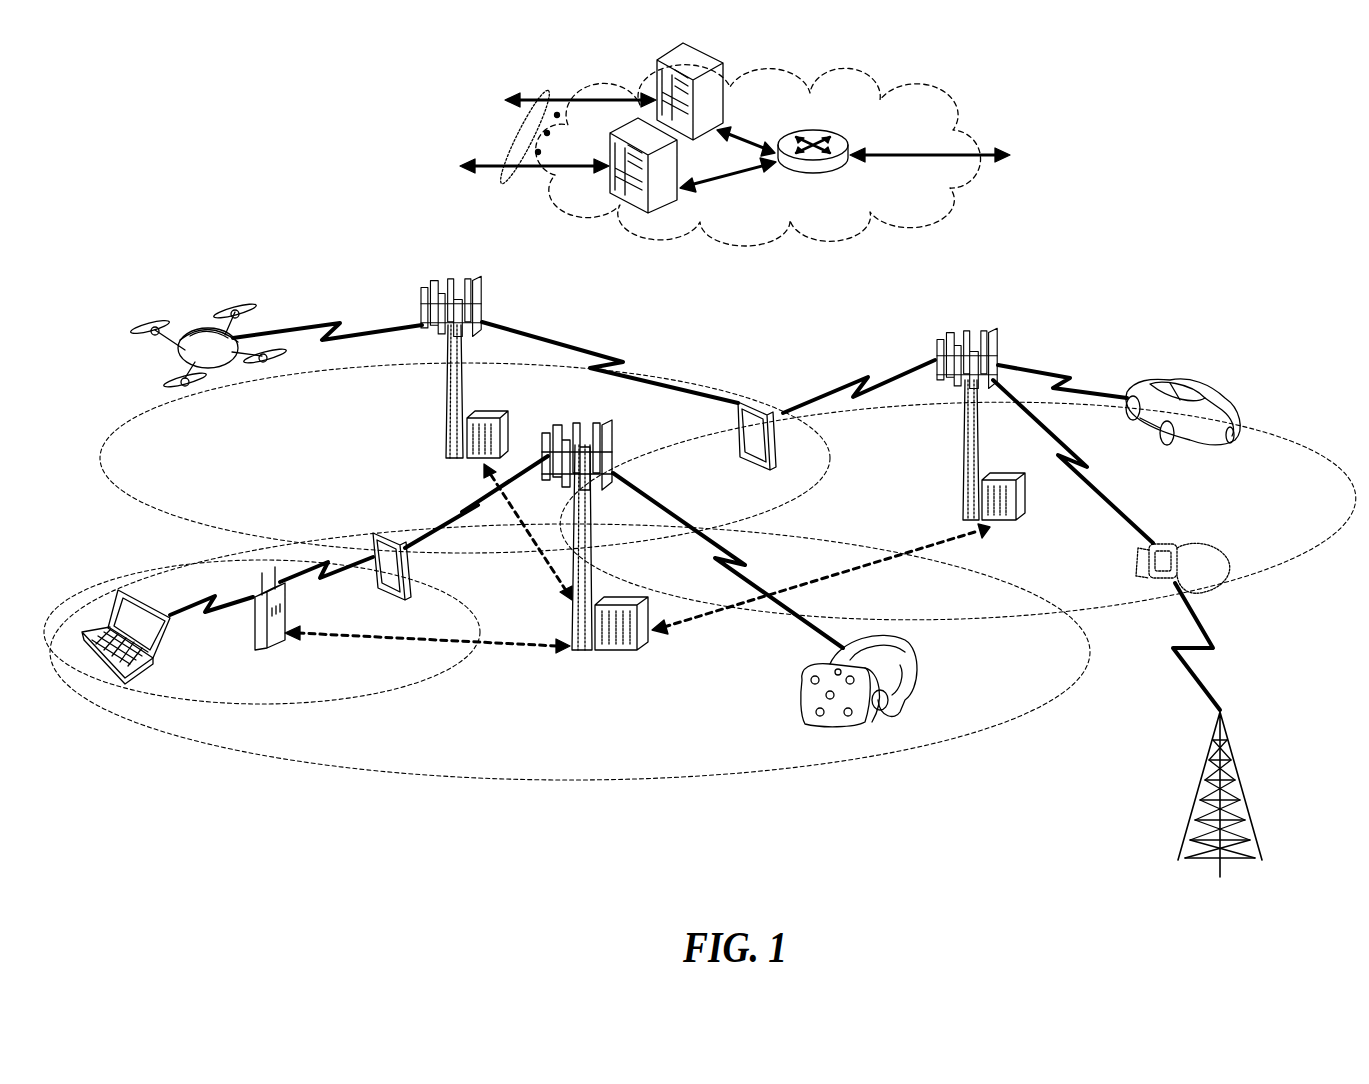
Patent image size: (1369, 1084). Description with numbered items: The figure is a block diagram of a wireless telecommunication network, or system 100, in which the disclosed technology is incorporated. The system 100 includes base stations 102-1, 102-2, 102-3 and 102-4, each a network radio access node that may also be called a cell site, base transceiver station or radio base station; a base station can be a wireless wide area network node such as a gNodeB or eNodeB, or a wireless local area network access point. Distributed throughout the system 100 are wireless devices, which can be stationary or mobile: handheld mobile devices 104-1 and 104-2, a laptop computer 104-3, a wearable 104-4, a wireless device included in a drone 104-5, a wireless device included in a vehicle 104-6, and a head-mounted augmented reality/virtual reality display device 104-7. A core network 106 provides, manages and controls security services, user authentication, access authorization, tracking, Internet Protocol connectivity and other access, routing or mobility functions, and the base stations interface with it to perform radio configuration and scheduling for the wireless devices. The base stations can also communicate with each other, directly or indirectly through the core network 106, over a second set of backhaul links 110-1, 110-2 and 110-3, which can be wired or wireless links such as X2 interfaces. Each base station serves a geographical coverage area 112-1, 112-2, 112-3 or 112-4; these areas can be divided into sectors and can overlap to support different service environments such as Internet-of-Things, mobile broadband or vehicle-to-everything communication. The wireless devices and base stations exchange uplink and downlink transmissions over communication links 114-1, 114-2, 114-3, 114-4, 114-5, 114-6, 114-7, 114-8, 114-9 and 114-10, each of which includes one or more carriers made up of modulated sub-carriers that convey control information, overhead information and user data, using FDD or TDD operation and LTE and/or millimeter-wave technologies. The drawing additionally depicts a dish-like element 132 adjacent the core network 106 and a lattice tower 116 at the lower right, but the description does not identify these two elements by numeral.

The wireless telecommunication network 100 is at (1256, 146).
The core network 106 is at (858, 222).
The external network connection / satellite dish 132 is at (520, 182).
The base station 102-1 is at (583, 653).
The base station 102-2 is at (445, 405).
The base station 102-3 is at (962, 440).
The base station 102-4 is at (250, 640).
The wireless device 104-1 is at (412, 578).
The wireless device 104-2 is at (737, 440).
The wireless device 104-3 is at (98, 675).
The wireless device 104-4 is at (1165, 540).
The wireless device 104-5 is at (225, 378).
The wireless device 104-6 is at (1210, 388).
The wireless device 104-7 is at (918, 660).
The backhaul link 110-1 is at (325, 636).
The backhaul link 110-2 is at (887, 565).
The backhaul link 110-3 is at (540, 570).
The geographical coverage area 112-1 is at (510, 780).
The geographical coverage area 112-2 is at (390, 700).
The geographical coverage area 112-3 is at (160, 515).
The geographical coverage area 112-4 is at (1263, 440).
The communication link 114-1 is at (750, 565).
The communication link 114-2 is at (465, 508).
The communication link 114-3 is at (205, 618).
The communication link 114-4 is at (325, 580).
The communication link 114-5 is at (330, 328).
The communication link 114-6 is at (613, 363).
The communication link 114-7 is at (855, 380).
The communication link 114-8 is at (1087, 477).
The communication link 114-9 is at (1055, 375).
The communication link 114-10 is at (1200, 650).
The communication tower 116 is at (1240, 770).